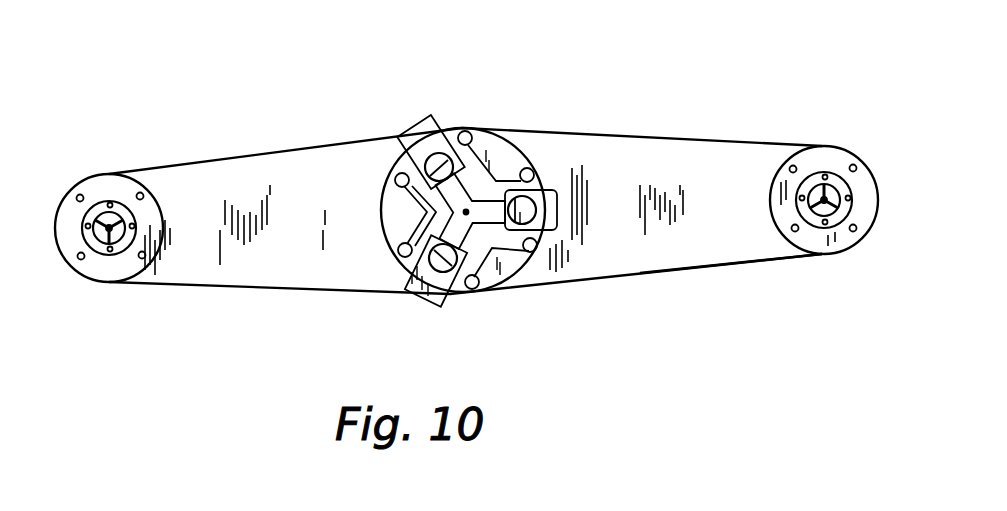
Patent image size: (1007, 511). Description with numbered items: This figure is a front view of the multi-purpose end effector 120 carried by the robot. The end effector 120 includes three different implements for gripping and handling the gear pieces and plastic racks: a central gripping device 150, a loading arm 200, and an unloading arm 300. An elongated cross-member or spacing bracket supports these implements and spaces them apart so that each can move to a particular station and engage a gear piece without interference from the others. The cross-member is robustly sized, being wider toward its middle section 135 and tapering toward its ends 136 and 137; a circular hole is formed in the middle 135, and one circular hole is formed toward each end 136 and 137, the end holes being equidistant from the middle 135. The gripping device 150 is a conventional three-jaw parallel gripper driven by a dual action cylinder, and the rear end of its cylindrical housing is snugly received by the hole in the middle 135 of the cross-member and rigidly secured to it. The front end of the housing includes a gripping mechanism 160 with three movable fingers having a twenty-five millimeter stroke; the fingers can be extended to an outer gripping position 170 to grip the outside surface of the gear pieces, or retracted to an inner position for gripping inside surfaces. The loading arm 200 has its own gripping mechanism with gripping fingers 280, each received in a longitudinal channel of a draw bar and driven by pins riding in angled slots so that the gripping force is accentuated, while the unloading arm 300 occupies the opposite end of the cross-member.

The multi-purpose end effector 120 is at (500, 82).
The middle section of the cross-member 135 is at (466, 212).
The end of the cross-member 136 is at (791, 144).
The end of the cross-member 137 is at (151, 168).
The gripping device 150 is at (522, 283).
The gripping mechanism 160 is at (430, 299).
The outer gripping position 170 is at (413, 133).
The loading arm 200 is at (820, 259).
The gripping fingers 280 is at (101, 238).
The unloading arm 300 is at (127, 286).